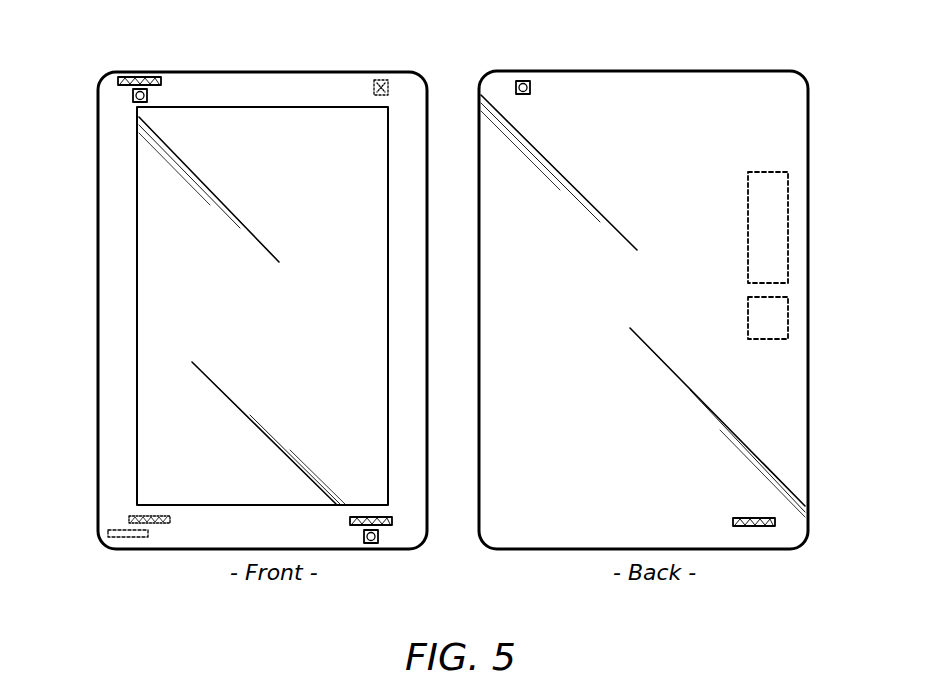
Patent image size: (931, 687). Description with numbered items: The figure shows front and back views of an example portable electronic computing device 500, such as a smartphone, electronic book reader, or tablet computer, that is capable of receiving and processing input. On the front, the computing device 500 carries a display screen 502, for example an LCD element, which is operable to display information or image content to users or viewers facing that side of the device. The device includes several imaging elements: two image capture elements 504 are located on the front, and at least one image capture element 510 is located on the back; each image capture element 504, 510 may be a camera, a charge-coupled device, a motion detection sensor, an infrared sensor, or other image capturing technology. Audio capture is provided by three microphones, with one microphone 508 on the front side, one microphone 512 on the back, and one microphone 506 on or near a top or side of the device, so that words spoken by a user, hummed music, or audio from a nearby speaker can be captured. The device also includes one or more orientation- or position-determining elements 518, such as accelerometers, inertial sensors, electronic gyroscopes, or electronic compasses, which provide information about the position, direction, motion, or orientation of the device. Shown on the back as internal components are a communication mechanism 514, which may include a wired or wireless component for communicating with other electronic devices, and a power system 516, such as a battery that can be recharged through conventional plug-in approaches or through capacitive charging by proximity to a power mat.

The electronic computing device 500 is at (840, 72).
The display screen 502 is at (137, 224).
The image capture element 504 is at (132, 96).
The microphone 506 is at (147, 77).
The microphone 508 is at (384, 525).
The image capture element 510 is at (381, 79).
The microphone 512 is at (151, 523).
The communication mechanism 514 is at (788, 246).
The power system 516 is at (788, 322).
The orientation- or position-determining element 518 is at (126, 538).